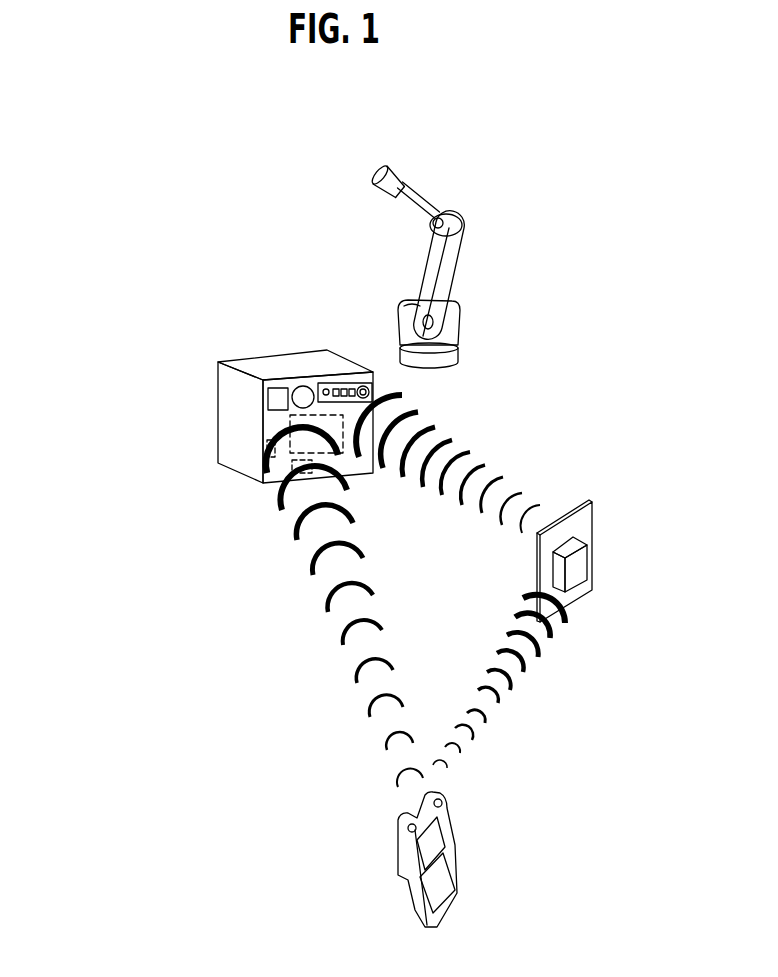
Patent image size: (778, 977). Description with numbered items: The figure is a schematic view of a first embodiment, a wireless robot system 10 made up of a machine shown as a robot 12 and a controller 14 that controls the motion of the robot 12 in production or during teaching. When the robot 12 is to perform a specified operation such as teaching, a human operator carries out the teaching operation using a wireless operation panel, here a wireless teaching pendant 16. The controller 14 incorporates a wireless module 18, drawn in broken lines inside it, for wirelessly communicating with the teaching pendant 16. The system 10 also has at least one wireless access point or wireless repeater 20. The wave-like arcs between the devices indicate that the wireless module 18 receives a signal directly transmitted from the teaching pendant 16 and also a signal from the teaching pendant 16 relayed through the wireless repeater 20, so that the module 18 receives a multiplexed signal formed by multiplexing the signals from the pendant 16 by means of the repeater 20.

The wireless system 10 is at (193, 230).
The robot 12 is at (478, 278).
The controller 14 is at (205, 412).
The wireless teaching pendant 16 is at (385, 852).
The wireless module 18 is at (323, 455).
The wireless repeater 20 is at (590, 597).